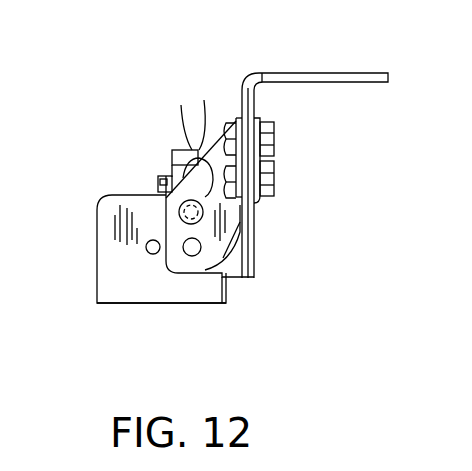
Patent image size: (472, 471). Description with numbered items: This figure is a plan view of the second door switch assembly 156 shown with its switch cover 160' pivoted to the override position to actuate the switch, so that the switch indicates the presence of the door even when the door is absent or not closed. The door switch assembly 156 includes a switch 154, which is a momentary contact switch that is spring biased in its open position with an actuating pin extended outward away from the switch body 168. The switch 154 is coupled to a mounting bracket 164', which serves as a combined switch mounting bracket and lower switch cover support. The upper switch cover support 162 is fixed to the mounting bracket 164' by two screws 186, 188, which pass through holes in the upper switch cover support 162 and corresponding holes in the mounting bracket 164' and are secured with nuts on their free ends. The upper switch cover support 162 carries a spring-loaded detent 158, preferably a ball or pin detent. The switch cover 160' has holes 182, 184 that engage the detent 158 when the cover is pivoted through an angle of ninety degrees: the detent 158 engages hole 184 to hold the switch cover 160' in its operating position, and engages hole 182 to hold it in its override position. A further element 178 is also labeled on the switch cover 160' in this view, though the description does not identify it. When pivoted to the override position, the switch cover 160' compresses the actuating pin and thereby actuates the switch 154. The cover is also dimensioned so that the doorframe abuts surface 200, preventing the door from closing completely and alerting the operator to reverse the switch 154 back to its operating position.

The door switch assembly 156 is at (234, 78).
The switch 154 is at (204, 100).
The switch body 168 is at (181, 105).
The spring-loaded detent 158 is at (172, 150).
The hole 182 is at (186, 203).
The switch cover 160' is at (141, 216).
The mounting bracket 164' is at (326, 175).
The screw 186 is at (275, 140).
The screw 188 is at (275, 181).
The upper switch cover support 162 is at (213, 257).
The hole 178 is at (192, 250).
The surface 200 is at (183, 304).
The hole 184 is at (150, 248).